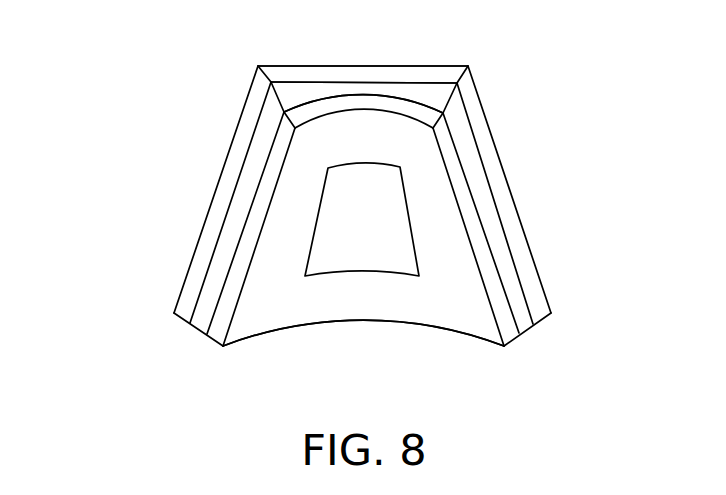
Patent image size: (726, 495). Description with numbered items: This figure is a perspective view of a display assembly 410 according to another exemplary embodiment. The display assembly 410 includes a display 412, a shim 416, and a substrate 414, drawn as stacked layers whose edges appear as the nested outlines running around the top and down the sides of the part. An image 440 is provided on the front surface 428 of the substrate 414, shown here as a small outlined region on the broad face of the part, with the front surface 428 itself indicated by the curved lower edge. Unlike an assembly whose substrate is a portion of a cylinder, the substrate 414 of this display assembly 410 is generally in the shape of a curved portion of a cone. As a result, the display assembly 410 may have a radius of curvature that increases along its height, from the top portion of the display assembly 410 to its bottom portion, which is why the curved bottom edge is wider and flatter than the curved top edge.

The display assembly 410 is at (140, 154).
The display 412 is at (447, 75).
The shim 416 is at (432, 93).
The substrate 414 is at (428, 116).
The image 440 is at (342, 228).
The front surface 428 is at (347, 304).